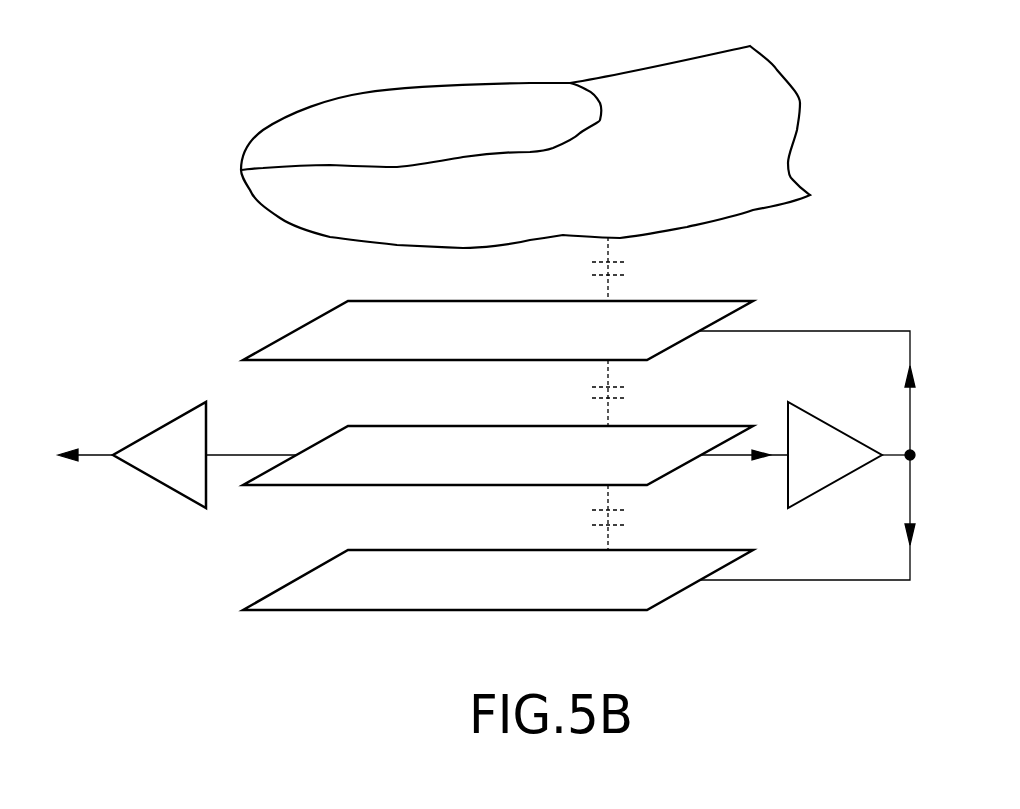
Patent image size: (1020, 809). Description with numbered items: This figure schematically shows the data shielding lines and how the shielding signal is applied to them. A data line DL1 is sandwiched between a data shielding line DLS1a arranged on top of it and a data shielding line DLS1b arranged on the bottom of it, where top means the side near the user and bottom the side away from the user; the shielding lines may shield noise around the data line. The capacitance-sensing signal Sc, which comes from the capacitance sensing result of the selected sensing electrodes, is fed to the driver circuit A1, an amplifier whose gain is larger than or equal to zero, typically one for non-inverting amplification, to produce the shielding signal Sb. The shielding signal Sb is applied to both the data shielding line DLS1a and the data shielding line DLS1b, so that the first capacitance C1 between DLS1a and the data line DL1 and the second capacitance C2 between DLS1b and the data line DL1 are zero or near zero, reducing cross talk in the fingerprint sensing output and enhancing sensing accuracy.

The data shielding line DLS1a is at (665, 312).
The data line DL1 is at (665, 437).
The data shielding line DLS1b is at (667, 560).
The first capacitance C1 is at (571, 393).
The second capacitance C2 is at (571, 517).
The capacitance-sensing signal Sc is at (744, 445).
The driver circuit A1 is at (835, 455).
The shielding signal Sb is at (824, 455).